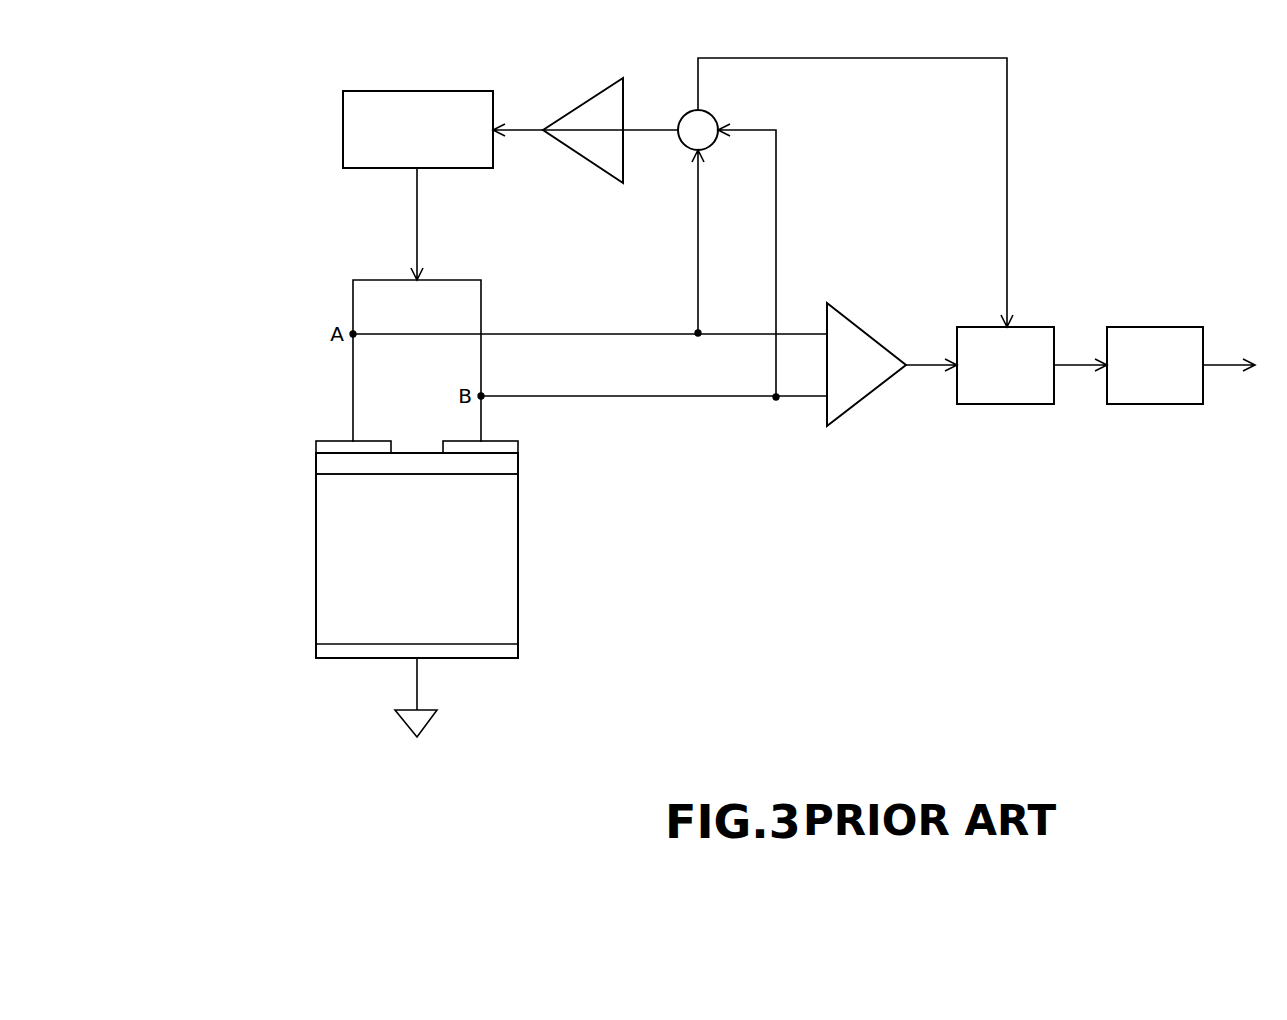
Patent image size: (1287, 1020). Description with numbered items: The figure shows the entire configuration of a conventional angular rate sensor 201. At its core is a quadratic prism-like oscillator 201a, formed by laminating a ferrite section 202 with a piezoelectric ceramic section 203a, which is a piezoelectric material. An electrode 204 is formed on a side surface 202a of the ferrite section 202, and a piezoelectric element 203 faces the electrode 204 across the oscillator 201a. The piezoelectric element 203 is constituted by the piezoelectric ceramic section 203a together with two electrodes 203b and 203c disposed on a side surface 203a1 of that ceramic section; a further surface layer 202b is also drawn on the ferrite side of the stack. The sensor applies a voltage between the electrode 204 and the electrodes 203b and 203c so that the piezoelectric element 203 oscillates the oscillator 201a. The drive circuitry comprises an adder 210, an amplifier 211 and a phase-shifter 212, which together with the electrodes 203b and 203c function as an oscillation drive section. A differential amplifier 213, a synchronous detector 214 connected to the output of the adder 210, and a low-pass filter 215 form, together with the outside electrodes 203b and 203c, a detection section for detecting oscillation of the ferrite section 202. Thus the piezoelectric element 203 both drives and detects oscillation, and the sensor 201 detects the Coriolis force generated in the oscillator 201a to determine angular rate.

The angular rate sensor 201 is at (448, 559).
The quadratic prism-like oscillator 201a is at (536, 577).
The ferrite section 202 is at (330, 575).
The side surface of ferrite section 202a is at (328, 646).
The top surface layer 202b is at (330, 470).
The piezoelectric element 203 is at (471, 442).
The piezoelectric ceramic section 203a is at (518, 474).
The side surface of piezoelectric ceramic section 203a1 is at (330, 451).
The electrode 203b is at (373, 449).
The electrode 203c is at (518, 448).
The electrode 204 is at (373, 646).
The adder 210 is at (714, 116).
The amplifier 211 is at (569, 107).
The phase-shifter 212 is at (374, 89).
The differential amplifier 213 is at (873, 335).
The synchronous detector 214 is at (1042, 326).
The low-pass filter 215 is at (1157, 326).